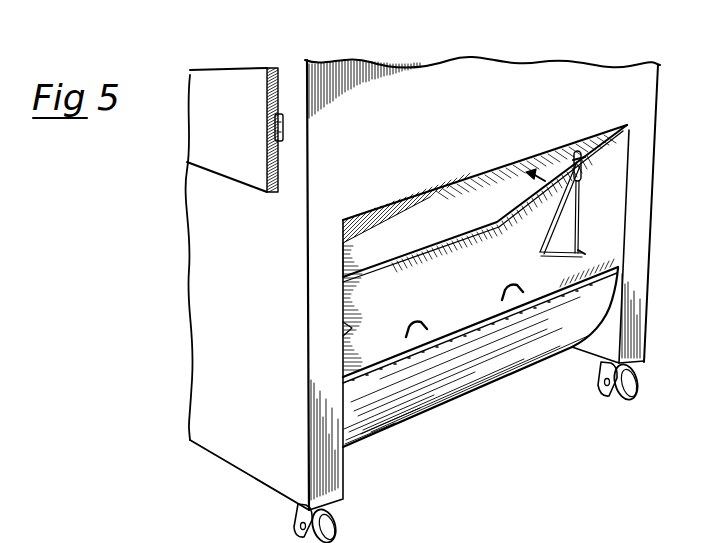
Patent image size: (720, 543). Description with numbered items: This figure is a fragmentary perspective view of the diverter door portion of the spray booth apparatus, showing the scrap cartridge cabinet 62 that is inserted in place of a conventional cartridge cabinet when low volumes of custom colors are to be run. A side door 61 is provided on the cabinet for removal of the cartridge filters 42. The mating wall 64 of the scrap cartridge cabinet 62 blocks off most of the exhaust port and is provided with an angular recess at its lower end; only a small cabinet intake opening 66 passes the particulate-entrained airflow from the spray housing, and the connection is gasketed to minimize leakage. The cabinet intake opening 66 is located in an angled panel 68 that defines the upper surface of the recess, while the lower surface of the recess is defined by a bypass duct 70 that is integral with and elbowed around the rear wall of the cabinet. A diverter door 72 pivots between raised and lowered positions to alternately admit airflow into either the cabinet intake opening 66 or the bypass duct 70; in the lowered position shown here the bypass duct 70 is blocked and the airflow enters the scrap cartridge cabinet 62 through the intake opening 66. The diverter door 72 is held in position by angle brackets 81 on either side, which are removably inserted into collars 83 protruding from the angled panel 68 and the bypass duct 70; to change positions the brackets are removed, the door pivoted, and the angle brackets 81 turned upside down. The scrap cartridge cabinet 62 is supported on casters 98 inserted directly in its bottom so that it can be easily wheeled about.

The cartridge filters 42 is at (20, 533).
The side door 61 is at (233, 127).
The scrap cartridge cabinet 62 is at (280, 54).
The mating wall 64 is at (406, 127).
The cabinet intake opening 66 is at (386, 228).
The angled panel 68 is at (465, 187).
The bypass duct 70 is at (463, 382).
The diverter door 72 is at (482, 304).
The angle brackets 81 is at (582, 211).
The collars 83 is at (587, 160).
The casters 98 is at (338, 527).